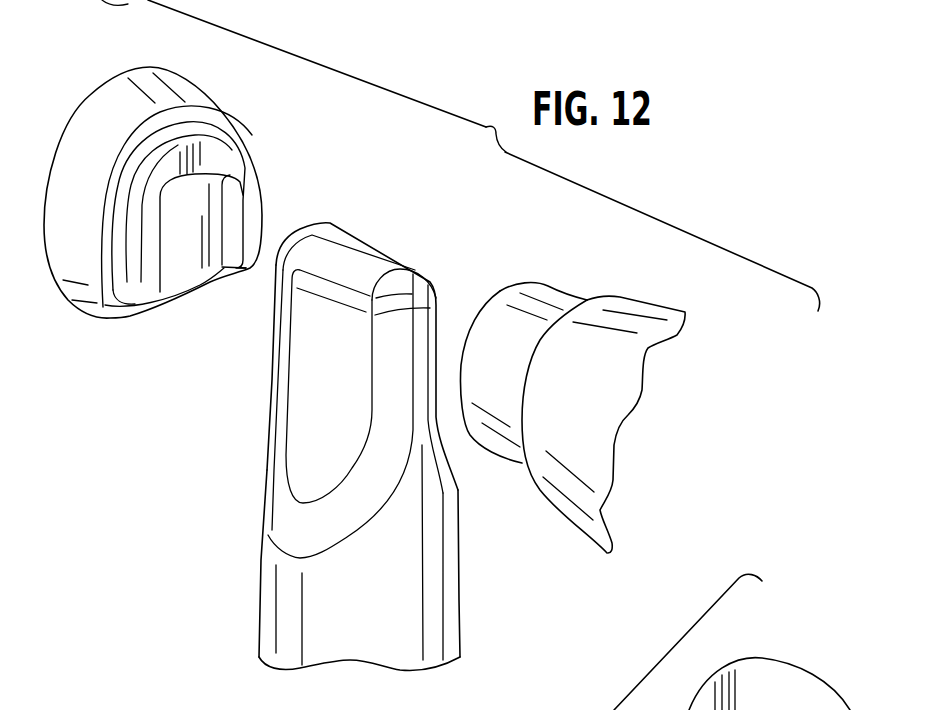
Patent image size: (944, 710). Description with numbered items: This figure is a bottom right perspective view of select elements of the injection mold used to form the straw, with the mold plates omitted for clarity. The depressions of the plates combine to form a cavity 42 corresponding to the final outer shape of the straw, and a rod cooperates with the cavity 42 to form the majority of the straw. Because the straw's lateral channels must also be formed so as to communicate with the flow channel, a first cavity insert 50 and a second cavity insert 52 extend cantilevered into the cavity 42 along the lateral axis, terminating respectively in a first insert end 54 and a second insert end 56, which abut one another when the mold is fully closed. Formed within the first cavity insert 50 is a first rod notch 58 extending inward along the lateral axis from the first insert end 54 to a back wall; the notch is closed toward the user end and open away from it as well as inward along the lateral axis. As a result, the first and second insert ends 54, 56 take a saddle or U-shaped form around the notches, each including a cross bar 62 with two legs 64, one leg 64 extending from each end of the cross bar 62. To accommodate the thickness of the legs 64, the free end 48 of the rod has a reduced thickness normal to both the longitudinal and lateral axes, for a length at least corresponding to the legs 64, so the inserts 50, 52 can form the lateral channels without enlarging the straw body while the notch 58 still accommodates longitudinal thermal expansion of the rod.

The cavity 42 is at (395, 595).
The free end 48 is at (357, 248).
The first cavity insert 50 is at (95, 122).
The second cavity insert 52 is at (621, 382).
The first insert end 54 is at (238, 168).
The second insert end 56 is at (502, 292).
The first rod notch 58 is at (188, 258).
The cross bar 62 is at (212, 160).
The legs 64 is at (252, 210).